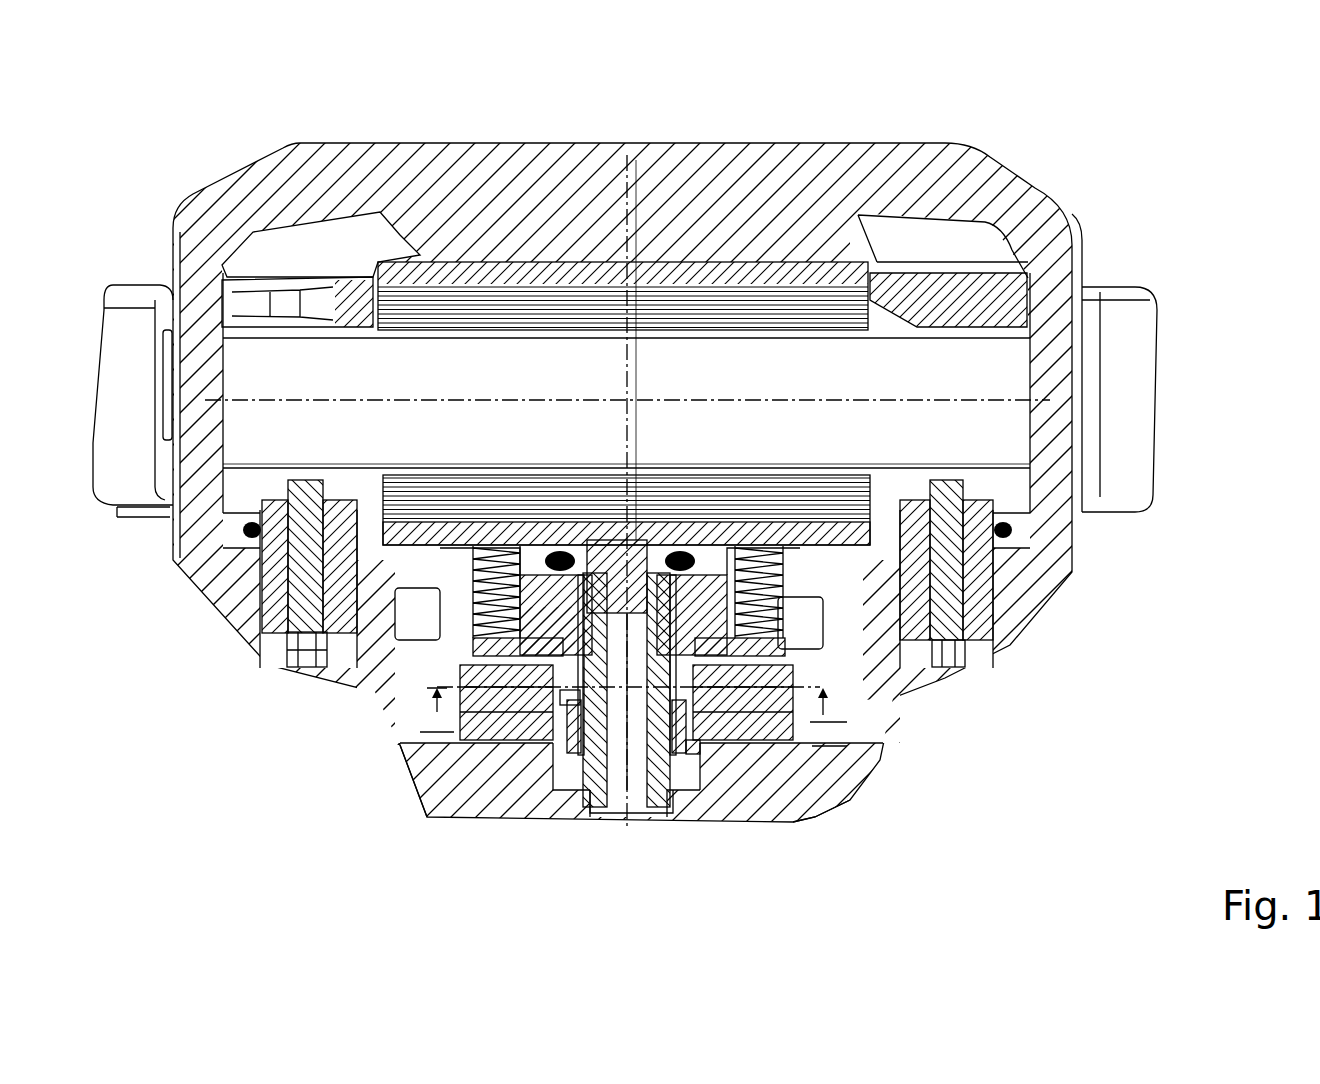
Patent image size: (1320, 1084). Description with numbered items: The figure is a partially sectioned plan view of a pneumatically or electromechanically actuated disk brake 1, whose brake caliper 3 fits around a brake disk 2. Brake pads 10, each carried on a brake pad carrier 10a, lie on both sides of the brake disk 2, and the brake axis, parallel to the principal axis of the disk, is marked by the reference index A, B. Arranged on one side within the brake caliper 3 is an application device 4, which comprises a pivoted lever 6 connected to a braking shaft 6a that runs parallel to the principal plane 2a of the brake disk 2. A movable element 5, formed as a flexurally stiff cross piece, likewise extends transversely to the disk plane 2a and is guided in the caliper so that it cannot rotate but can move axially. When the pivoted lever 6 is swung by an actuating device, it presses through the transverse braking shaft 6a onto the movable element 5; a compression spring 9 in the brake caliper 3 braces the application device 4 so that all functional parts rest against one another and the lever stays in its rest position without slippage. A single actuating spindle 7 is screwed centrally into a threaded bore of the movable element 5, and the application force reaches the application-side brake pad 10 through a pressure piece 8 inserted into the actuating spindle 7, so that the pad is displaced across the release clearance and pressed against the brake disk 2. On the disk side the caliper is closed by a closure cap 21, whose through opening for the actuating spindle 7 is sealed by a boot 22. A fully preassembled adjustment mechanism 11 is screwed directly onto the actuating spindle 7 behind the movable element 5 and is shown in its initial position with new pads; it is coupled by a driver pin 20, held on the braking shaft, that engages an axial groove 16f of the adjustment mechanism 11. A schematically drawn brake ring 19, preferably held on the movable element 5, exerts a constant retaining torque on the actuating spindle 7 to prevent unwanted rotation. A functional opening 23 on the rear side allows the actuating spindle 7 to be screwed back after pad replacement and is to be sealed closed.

The disk brake 1 is at (625, 450).
The brake disk 2 is at (937, 358).
The principal plane of the brake disk 2a is at (968, 392).
The brake caliper 3 is at (693, 168).
The application device 4 is at (836, 630).
The movable element 5 is at (806, 628).
The pivoted lever 6 is at (826, 668).
The braking shaft 6a is at (473, 728).
The actuating spindle 7 is at (687, 763).
The pressure piece 8 is at (636, 540).
The compression spring 9 is at (805, 536).
The brake pad 10 is at (543, 305).
The brake pad carrier 10a is at (487, 275).
The adjustment mechanism 11 is at (737, 765).
The axial groove 16f is at (501, 781).
The brake ring 19 is at (740, 705).
The driver pin 20 is at (563, 703).
The closure cap 21 is at (450, 566).
The boot 22 is at (542, 568).
The functional opening 23 is at (625, 825).
The brake axis index A is at (627, 780).
The brake axis index B is at (687, 753).